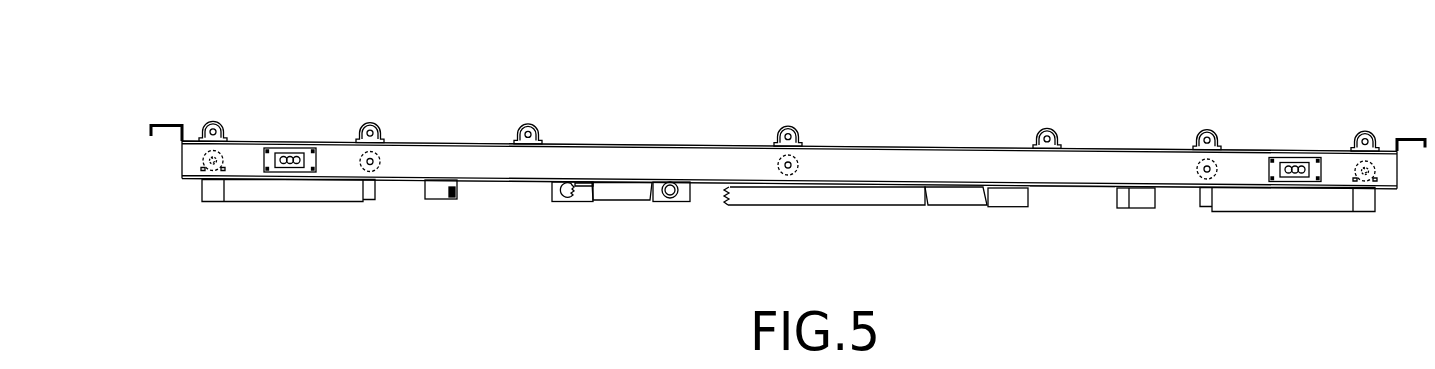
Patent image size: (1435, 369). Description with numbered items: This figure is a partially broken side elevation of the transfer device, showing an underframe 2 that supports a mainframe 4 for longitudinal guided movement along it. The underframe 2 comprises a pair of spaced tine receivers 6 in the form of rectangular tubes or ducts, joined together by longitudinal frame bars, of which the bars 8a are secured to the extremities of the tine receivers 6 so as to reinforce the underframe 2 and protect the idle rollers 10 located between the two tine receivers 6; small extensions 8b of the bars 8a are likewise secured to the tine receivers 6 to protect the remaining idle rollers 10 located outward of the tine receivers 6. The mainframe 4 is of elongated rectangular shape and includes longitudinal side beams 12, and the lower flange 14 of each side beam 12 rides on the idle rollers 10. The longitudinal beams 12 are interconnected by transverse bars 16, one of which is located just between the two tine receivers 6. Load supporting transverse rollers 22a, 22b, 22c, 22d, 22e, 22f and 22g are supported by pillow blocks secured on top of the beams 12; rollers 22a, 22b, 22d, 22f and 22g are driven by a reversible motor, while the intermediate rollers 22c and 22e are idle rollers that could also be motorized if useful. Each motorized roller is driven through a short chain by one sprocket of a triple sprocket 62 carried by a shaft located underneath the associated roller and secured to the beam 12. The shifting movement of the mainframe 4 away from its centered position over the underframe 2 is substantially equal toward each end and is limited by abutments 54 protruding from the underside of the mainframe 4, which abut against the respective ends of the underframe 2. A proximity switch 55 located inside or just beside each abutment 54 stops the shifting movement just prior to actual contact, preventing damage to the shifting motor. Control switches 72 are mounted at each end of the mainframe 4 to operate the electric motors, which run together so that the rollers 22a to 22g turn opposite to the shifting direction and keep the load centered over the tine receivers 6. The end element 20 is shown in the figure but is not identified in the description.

The underframe 2 is at (699, 204).
The mainframe 4 is at (517, 189).
The tine receiver 6 is at (640, 185).
The frame bar 8a is at (801, 197).
The extension 8b is at (585, 198).
The idle roller 10 is at (665, 203).
The longitudinal side beam 12 is at (657, 145).
The lower flange 14 is at (1070, 185).
The transverse bar 16 is at (1147, 201).
The end flange 20 is at (145, 131).
The load supporting transverse roller 22a is at (1375, 131).
The load supporting transverse roller 22b is at (1215, 130).
The load supporting transverse roller 22c is at (1057, 128).
The load supporting transverse roller 22d is at (794, 124).
The load supporting transverse roller 22e is at (536, 126).
The load supporting transverse roller 22f is at (380, 125).
The load supporting transverse roller 22g is at (220, 117).
The abutment 54 is at (460, 182).
The proximity switch 55 is at (452, 199).
The triple sprocket 62 is at (230, 148).
The control switch 72 is at (285, 172).